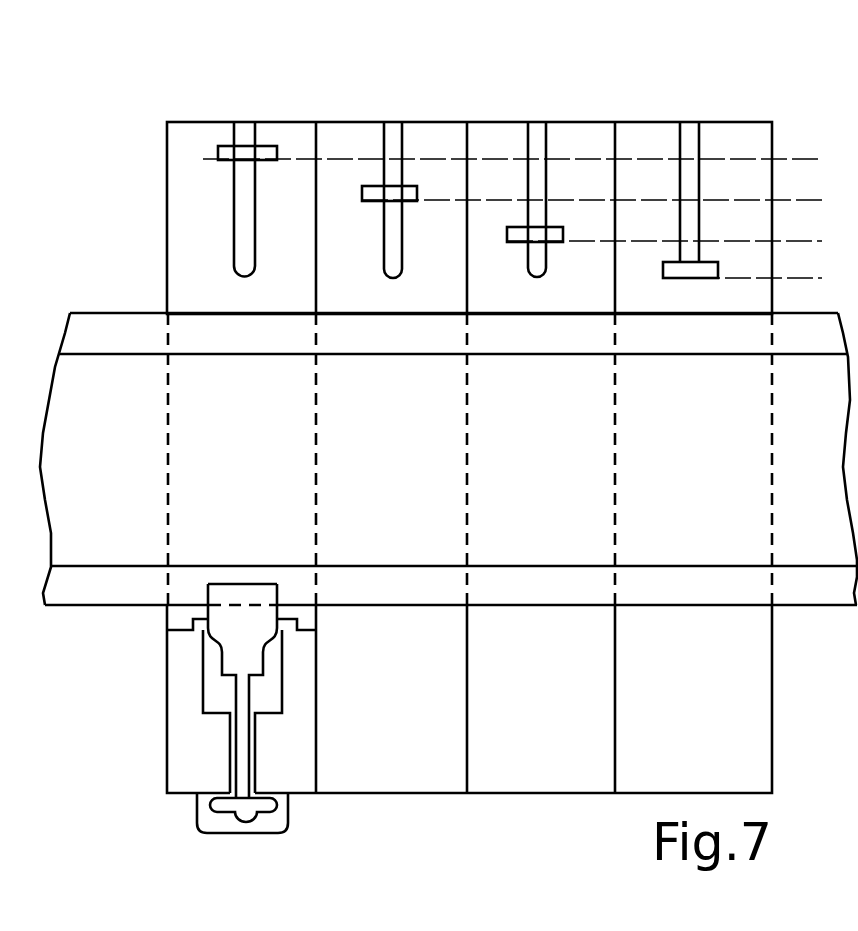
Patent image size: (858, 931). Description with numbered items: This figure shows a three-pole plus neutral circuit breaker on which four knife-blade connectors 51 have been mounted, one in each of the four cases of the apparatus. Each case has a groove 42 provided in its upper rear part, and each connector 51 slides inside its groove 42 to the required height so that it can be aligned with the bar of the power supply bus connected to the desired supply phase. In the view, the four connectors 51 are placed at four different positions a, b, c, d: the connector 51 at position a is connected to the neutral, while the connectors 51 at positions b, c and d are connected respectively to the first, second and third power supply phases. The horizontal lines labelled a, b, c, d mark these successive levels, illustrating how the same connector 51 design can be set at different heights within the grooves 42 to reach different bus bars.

The connector 51 is at (242, 152).
The groove 42 is at (690, 167).
The first position a is at (526, 146).
The second position b is at (606, 189).
The third position c is at (678, 229).
The fourth position d is at (757, 267).